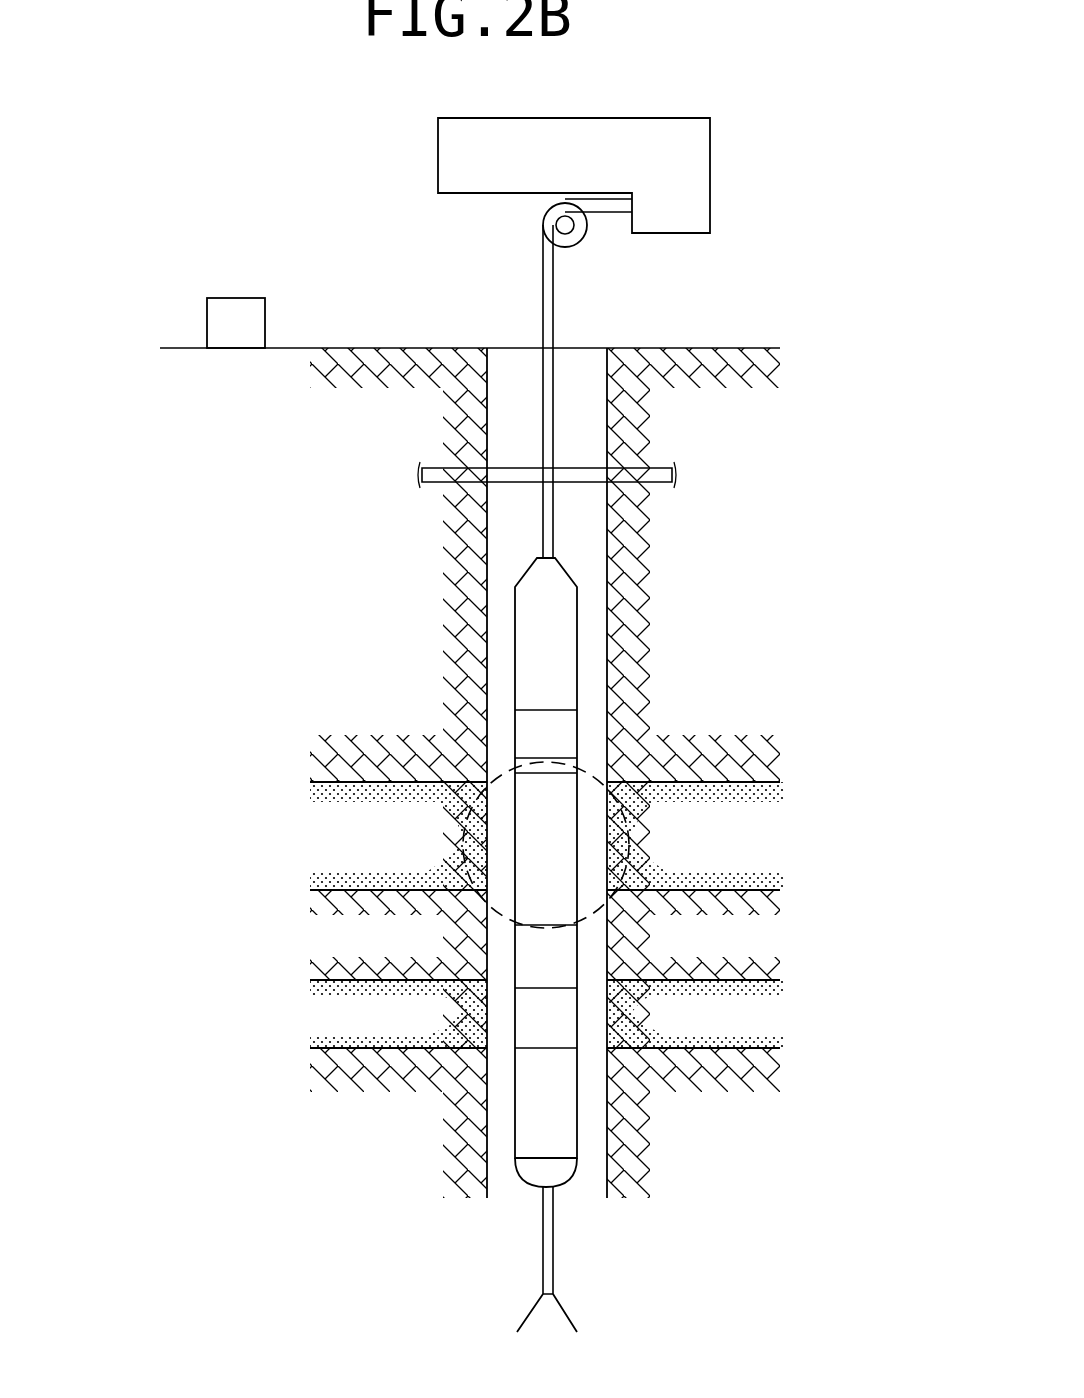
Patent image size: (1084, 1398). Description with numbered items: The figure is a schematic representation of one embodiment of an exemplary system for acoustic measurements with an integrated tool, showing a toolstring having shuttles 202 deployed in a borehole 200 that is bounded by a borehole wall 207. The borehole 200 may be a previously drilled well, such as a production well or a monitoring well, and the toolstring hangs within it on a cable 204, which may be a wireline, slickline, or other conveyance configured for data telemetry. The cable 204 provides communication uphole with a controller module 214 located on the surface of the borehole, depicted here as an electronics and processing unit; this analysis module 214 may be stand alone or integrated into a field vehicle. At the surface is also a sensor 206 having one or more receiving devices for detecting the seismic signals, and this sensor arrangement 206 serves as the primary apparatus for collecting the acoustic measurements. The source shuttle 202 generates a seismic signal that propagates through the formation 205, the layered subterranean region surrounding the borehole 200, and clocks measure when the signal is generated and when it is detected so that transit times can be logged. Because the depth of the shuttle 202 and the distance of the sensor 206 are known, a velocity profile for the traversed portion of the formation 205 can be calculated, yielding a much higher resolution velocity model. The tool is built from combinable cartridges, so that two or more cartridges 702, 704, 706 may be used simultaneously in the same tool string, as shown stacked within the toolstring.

The controller module 214 is at (438, 160).
The sensor 206 is at (237, 298).
The cable 204 is at (542, 288).
The borehole wall 207 is at (607, 383).
The shuttle 202 is at (592, 938).
The borehole 200 is at (590, 692).
The formation 205 is at (547, 915).
The combinable cartridge 704 is at (523, 745).
The combinable cartridge 702 is at (523, 864).
The combinable cartridge 706 is at (523, 966).